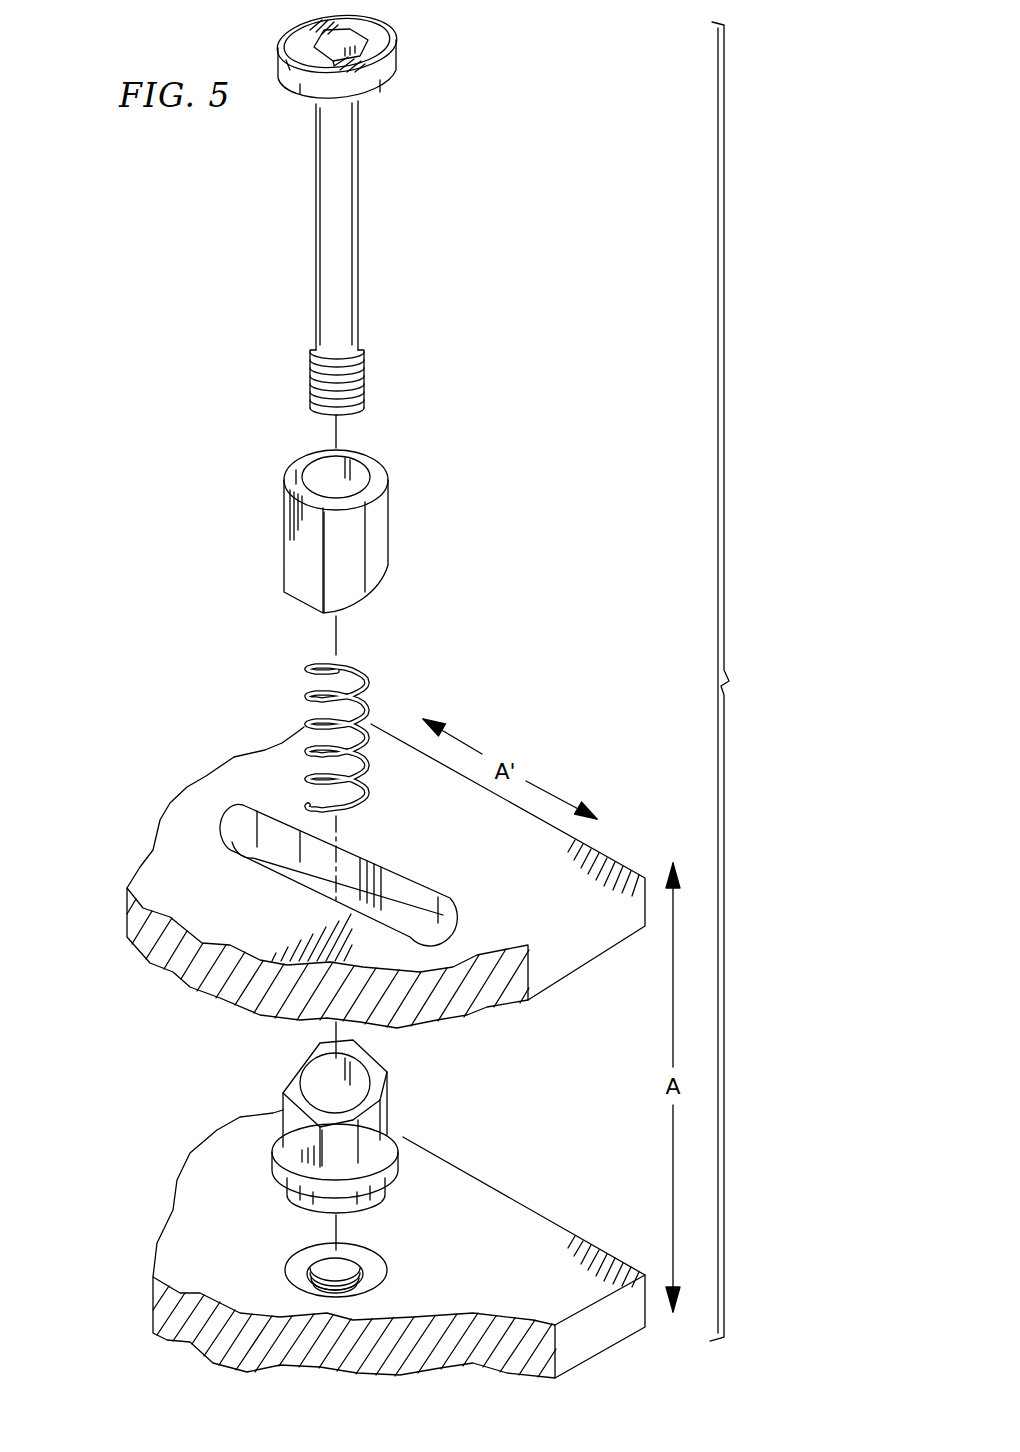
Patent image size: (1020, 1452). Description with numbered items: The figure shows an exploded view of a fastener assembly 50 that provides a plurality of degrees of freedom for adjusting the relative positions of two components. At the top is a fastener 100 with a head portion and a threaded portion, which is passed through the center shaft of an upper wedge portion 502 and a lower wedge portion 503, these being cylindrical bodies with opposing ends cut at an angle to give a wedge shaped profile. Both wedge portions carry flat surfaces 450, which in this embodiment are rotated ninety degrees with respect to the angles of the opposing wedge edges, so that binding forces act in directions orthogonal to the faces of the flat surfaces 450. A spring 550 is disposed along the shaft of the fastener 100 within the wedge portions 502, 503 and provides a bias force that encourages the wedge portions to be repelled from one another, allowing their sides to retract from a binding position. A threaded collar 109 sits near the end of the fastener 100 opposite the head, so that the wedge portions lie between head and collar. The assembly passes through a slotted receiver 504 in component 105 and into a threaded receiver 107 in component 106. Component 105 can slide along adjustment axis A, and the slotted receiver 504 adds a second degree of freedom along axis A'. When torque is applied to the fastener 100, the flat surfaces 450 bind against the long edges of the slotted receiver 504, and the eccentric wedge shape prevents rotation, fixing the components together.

The fastener 100 is at (316, 228).
The upper wedge portion 502 is at (388, 520).
The flat surfaces 450 is at (303, 525).
The spring 550 is at (305, 689).
The component 105 is at (204, 781).
The slotted receiver 504 is at (411, 887).
The lower wedge portion 503 is at (388, 1107).
The threaded collar 109 is at (272, 1157).
The component 106 is at (518, 1208).
The receiver 107 is at (354, 1265).
The fastener assembly 50 is at (736, 681).